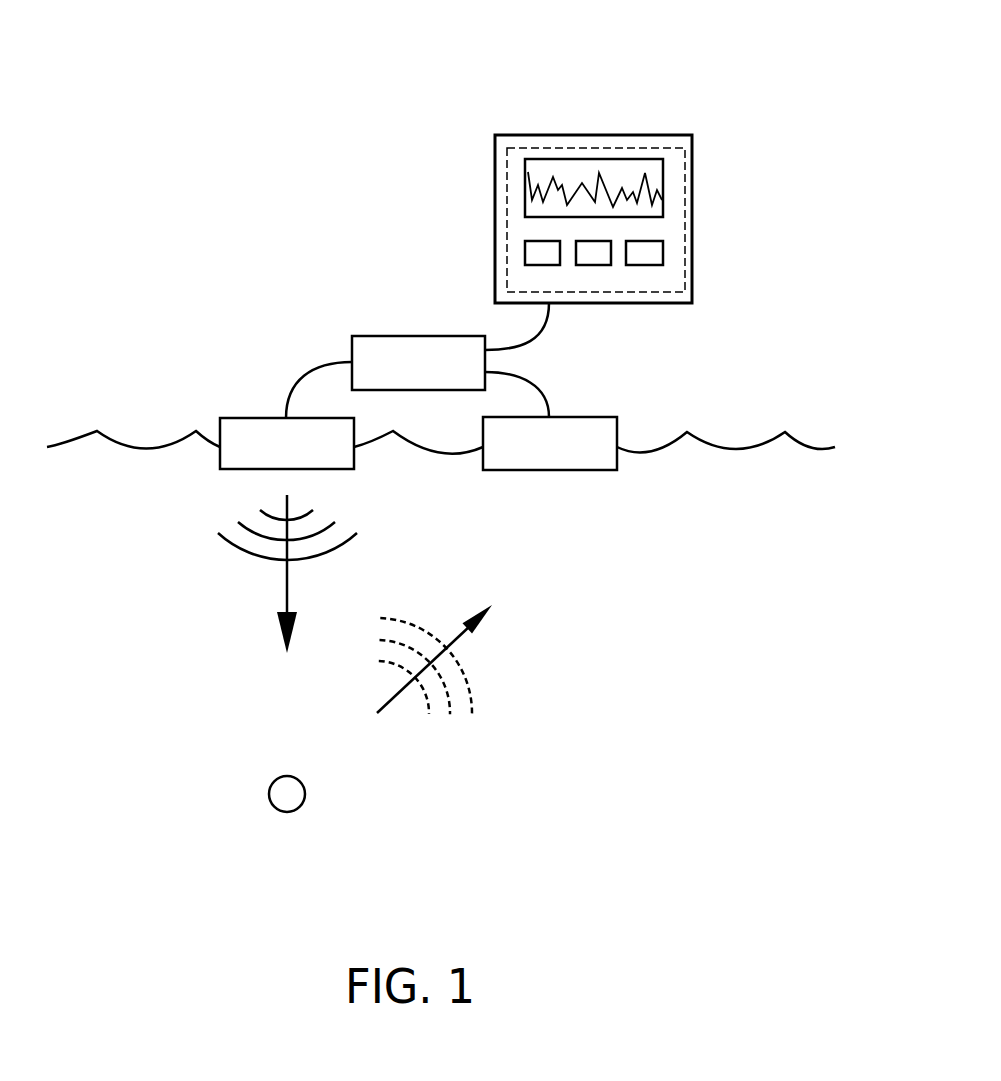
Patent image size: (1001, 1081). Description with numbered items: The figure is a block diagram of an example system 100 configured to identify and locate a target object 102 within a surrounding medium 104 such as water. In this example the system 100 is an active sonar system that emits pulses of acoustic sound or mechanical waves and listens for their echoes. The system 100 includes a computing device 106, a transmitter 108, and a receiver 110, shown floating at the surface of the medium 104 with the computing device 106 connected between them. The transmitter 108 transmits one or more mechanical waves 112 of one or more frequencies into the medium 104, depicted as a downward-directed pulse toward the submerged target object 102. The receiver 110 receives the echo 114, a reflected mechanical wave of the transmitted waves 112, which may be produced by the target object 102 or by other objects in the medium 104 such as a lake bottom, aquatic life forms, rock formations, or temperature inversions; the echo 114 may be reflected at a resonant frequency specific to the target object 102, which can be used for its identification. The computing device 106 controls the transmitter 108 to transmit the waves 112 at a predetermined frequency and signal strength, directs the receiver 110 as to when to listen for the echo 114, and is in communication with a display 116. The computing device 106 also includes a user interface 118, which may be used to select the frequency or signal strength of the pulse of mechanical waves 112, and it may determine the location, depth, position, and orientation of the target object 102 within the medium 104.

The system 100 is at (106, 138).
The target object 102 is at (268, 783).
The surrounding medium 104 is at (138, 447).
The computing device 106 is at (437, 336).
The transmitter 108 is at (247, 418).
The receiver 110 is at (588, 417).
The mechanical waves 112 is at (287, 575).
The echo 114 is at (397, 700).
The display 116 is at (642, 135).
The user interface 118 is at (663, 200).